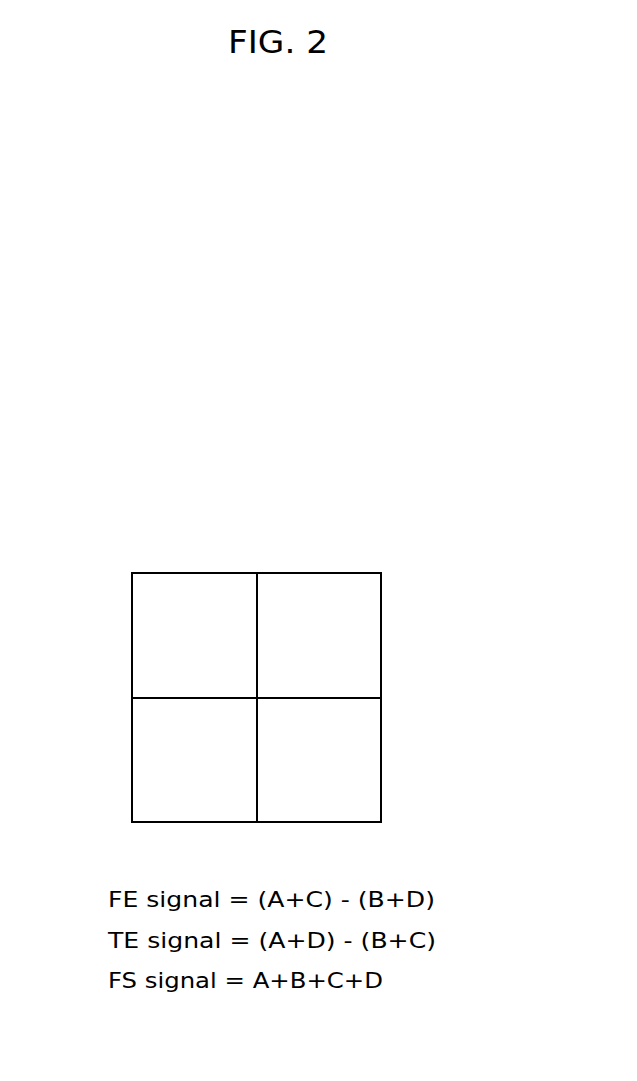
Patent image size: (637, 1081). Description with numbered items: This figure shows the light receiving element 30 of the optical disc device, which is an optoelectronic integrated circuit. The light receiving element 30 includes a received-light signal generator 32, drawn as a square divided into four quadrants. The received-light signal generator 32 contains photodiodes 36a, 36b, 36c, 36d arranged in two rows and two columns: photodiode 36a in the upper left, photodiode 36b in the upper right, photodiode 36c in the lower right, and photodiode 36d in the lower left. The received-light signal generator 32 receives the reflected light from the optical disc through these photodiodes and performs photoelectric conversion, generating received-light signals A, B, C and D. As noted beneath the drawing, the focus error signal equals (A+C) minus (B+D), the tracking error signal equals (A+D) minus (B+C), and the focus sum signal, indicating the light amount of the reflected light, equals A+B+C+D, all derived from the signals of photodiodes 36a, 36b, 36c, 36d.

The light receiving element 30 is at (432, 505).
The received-light signal generator 32 is at (382, 573).
The photodiode 36a is at (150, 617).
The photodiode 36b is at (358, 621).
The photodiode 36c is at (358, 764).
The photodiode 36d is at (150, 762).